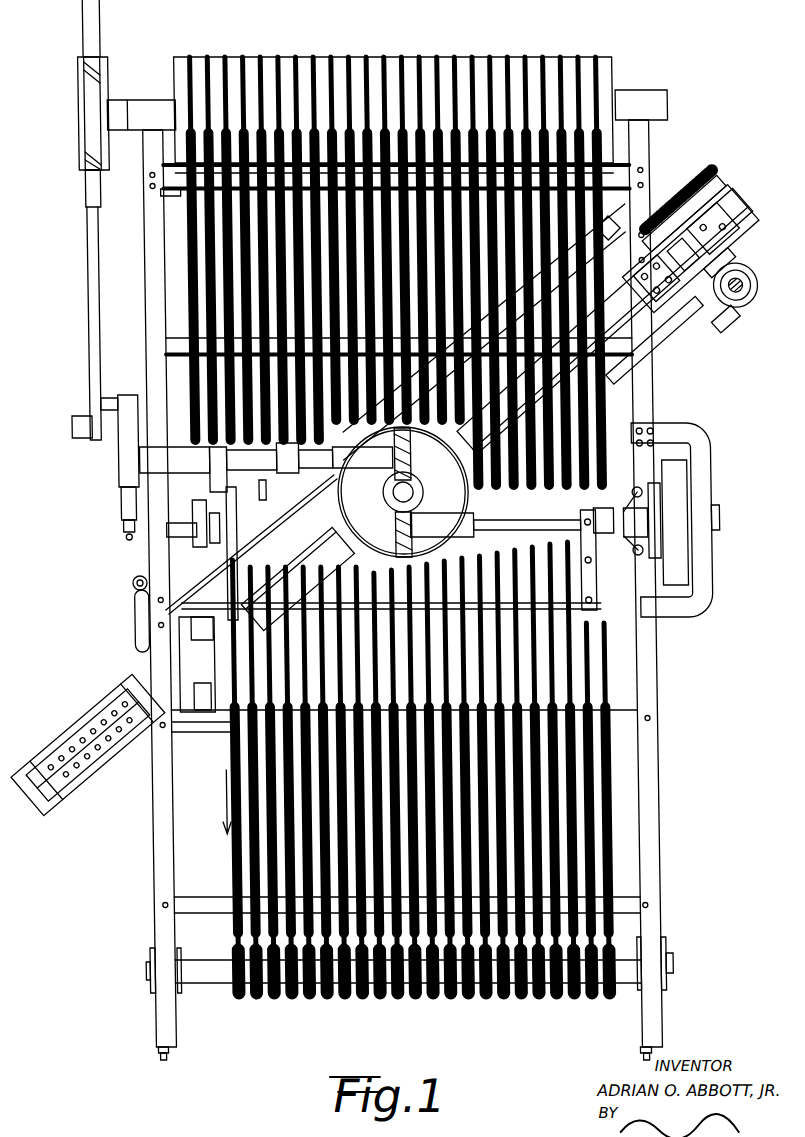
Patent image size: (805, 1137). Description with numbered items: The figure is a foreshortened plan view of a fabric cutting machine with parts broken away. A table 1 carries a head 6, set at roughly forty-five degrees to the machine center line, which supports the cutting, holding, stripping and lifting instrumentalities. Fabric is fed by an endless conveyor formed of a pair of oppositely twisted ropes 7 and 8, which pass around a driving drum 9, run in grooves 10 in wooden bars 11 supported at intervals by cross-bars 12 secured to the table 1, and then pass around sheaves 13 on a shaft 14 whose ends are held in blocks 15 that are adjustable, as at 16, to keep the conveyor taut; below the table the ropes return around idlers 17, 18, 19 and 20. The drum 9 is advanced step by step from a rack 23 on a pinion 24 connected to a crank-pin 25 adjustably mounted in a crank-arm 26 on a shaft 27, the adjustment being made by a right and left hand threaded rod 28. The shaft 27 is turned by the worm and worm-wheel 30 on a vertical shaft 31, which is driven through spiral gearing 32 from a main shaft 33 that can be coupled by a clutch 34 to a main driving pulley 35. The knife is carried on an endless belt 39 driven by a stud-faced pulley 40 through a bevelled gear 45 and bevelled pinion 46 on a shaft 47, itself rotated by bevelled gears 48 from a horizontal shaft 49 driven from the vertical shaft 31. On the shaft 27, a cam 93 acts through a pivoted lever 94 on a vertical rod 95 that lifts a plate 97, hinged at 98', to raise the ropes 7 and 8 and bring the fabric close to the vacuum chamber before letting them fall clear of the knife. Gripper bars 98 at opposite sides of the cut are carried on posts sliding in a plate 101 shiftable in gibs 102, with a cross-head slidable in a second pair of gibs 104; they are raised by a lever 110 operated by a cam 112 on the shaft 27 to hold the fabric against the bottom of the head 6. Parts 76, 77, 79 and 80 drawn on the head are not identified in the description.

The table 1 is at (660, 810).
The head 6 is at (35, 780).
The rope 7 is at (415, 55).
The rope 8 is at (373, 55).
The driving drum 9 is at (524, 62).
The grooves 10 is at (590, 624).
The wooden bars 11 is at (606, 680).
The cross-bars 12 is at (180, 342).
The sheaves 13 is at (270, 990).
The shaft 14 is at (203, 975).
The blocks 15 is at (143, 995).
The adjustment 16 is at (157, 1060).
The idler 17 is at (428, 138).
The idler 18 is at (380, 133).
The idler 19 is at (572, 133).
The idler 20 is at (198, 203).
The rack 23 is at (107, 27).
The pinion 24 is at (92, 290).
The crank-pin 25 is at (74, 430).
The crank-arm 26 is at (121, 462).
The shaft 27 is at (330, 470).
The right and left hand threaded rod 28 is at (122, 531).
The worm and worm-wheel 30 is at (412, 470).
The vertical shaft 31 is at (420, 490).
The spiral gearing 32 is at (398, 520).
The main shaft 33 is at (517, 520).
The clutch 34 is at (650, 485).
The main driving pulley 35 is at (676, 556).
The endless belt 39 is at (132, 697).
The pulley 40 is at (672, 240).
The bevelled gear 45 is at (740, 262).
The bevelled pinion 46 is at (758, 283).
The shaft 47 is at (751, 296).
The bevelled gears 48 is at (733, 322).
The horizontal shaft 49 is at (685, 340).
The housing 76 is at (762, 218).
The carriage 77 is at (740, 200).
The rack 79 is at (722, 187).
The rack teeth 80 is at (712, 183).
The cam 93 is at (607, 230).
The pivoted lever 94 is at (262, 483).
The vertical rod 95 is at (297, 578).
The plate 97 is at (210, 572).
The gripper bars 98 is at (135, 633).
The hinge 98' is at (139, 565).
The plate 101 is at (180, 650).
The gibs 102 is at (196, 636).
The second pair of gibs 104 is at (226, 705).
The lever 110 is at (195, 530).
The cam 112 is at (210, 458).